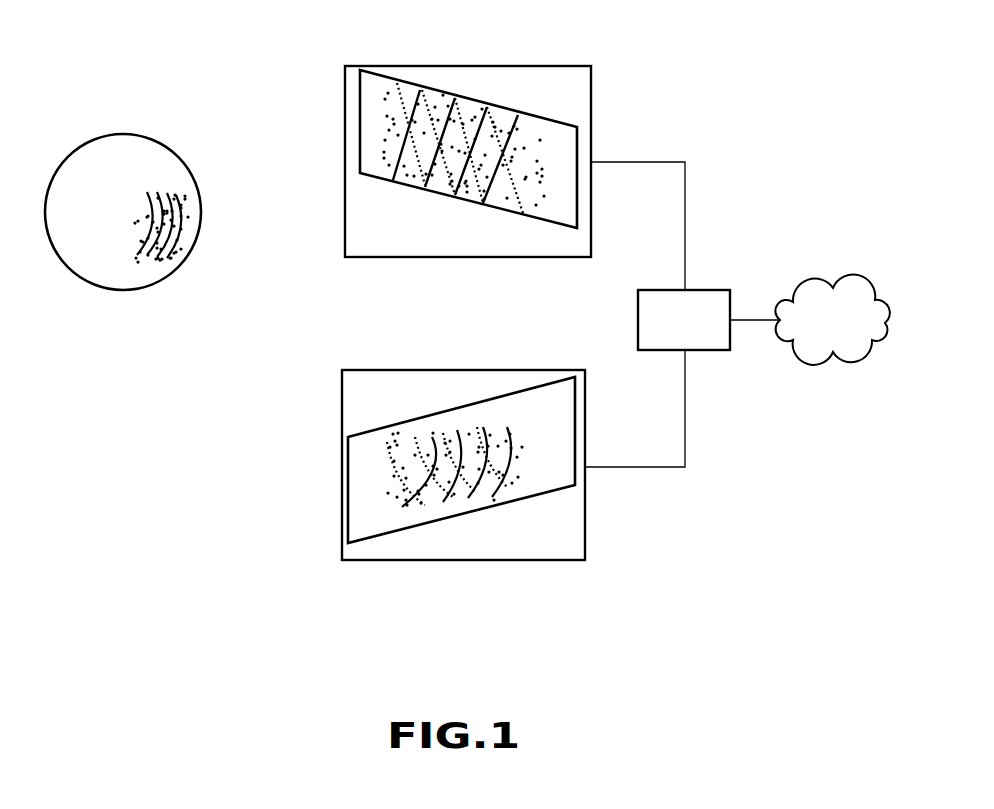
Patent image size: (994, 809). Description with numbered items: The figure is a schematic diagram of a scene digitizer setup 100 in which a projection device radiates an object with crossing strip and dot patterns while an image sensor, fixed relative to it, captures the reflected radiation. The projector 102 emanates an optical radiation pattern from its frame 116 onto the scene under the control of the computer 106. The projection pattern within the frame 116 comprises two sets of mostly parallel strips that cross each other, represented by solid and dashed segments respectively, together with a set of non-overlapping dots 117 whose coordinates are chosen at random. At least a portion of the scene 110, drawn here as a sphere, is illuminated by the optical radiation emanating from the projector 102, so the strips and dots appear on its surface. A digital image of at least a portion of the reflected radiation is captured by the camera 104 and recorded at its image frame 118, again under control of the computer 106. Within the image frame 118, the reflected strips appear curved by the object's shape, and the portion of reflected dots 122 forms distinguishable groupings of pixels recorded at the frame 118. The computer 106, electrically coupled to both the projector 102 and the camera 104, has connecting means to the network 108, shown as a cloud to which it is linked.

The scene digitizer setup 100 is at (211, 424).
The projector 102 is at (468, 138).
The camera 104 is at (463, 444).
The computer 106 is at (700, 290).
The network 108 is at (834, 270).
The scene 110 is at (82, 141).
The frame 116 is at (469, 199).
The dots 117 is at (503, 116).
The image frame 118 is at (520, 505).
The reflected dots 122 is at (548, 433).